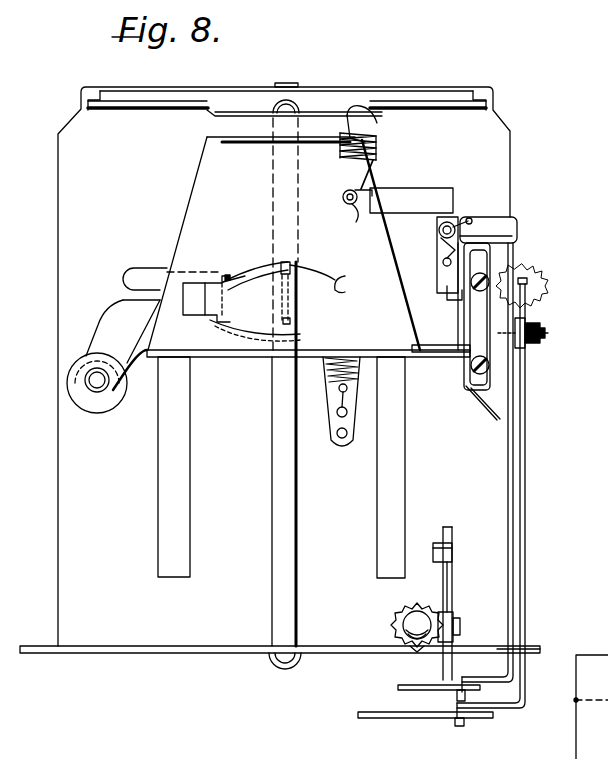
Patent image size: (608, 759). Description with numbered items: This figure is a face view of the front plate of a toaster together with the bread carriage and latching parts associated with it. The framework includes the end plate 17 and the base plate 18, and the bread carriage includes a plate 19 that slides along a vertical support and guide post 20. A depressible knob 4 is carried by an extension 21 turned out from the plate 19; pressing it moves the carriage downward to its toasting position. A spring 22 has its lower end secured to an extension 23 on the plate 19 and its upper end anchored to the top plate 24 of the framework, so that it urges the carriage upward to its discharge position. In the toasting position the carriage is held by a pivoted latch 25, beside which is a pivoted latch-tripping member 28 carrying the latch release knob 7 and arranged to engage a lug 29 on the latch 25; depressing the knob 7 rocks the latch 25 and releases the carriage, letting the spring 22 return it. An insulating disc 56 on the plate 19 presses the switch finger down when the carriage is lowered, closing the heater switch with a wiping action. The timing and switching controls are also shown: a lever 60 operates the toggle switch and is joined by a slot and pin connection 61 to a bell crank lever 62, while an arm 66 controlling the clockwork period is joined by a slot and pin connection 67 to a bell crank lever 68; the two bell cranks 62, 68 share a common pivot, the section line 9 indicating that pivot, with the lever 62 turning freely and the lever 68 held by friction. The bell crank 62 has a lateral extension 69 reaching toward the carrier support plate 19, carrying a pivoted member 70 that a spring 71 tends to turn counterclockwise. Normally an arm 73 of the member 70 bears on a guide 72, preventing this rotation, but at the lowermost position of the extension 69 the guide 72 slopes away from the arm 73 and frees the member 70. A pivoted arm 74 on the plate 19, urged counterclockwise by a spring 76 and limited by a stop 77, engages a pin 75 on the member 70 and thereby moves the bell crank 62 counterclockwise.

The depressible knob 4 is at (235, 286).
The latch release knob 7 is at (400, 625).
The section line 9- 9 is at (498, 333).
The end plate 17 is at (68, 275).
The base plate 18 is at (178, 646).
The plate 19 is at (190, 216).
The vertical support and guide post 20 is at (288, 573).
The extension 21 is at (280, 322).
The spring 22 is at (372, 158).
The extension 23 is at (340, 450).
The top plate 24 is at (326, 112).
The pivoted latch 25 is at (453, 591).
The latch-tripping member 28 is at (443, 591).
The lug 29 is at (434, 550).
The insulating disc 56 is at (95, 407).
The lever 60 is at (418, 685).
The slot and pin connection 61 is at (456, 694).
The bell crank lever 62 is at (512, 482).
The arm 66 is at (390, 718).
The slot and pin connection 67 is at (465, 723).
The bell crank lever 68 is at (526, 549).
The lateral extension 69 is at (495, 222).
The pivoted member 70 is at (440, 263).
The spring 71 is at (456, 222).
The guide 72 is at (466, 338).
The arm 73 is at (452, 296).
The pivoted arm 74 is at (425, 197).
The pin 75 is at (445, 250).
The spring 76 is at (343, 200).
The stop 77 is at (366, 184).